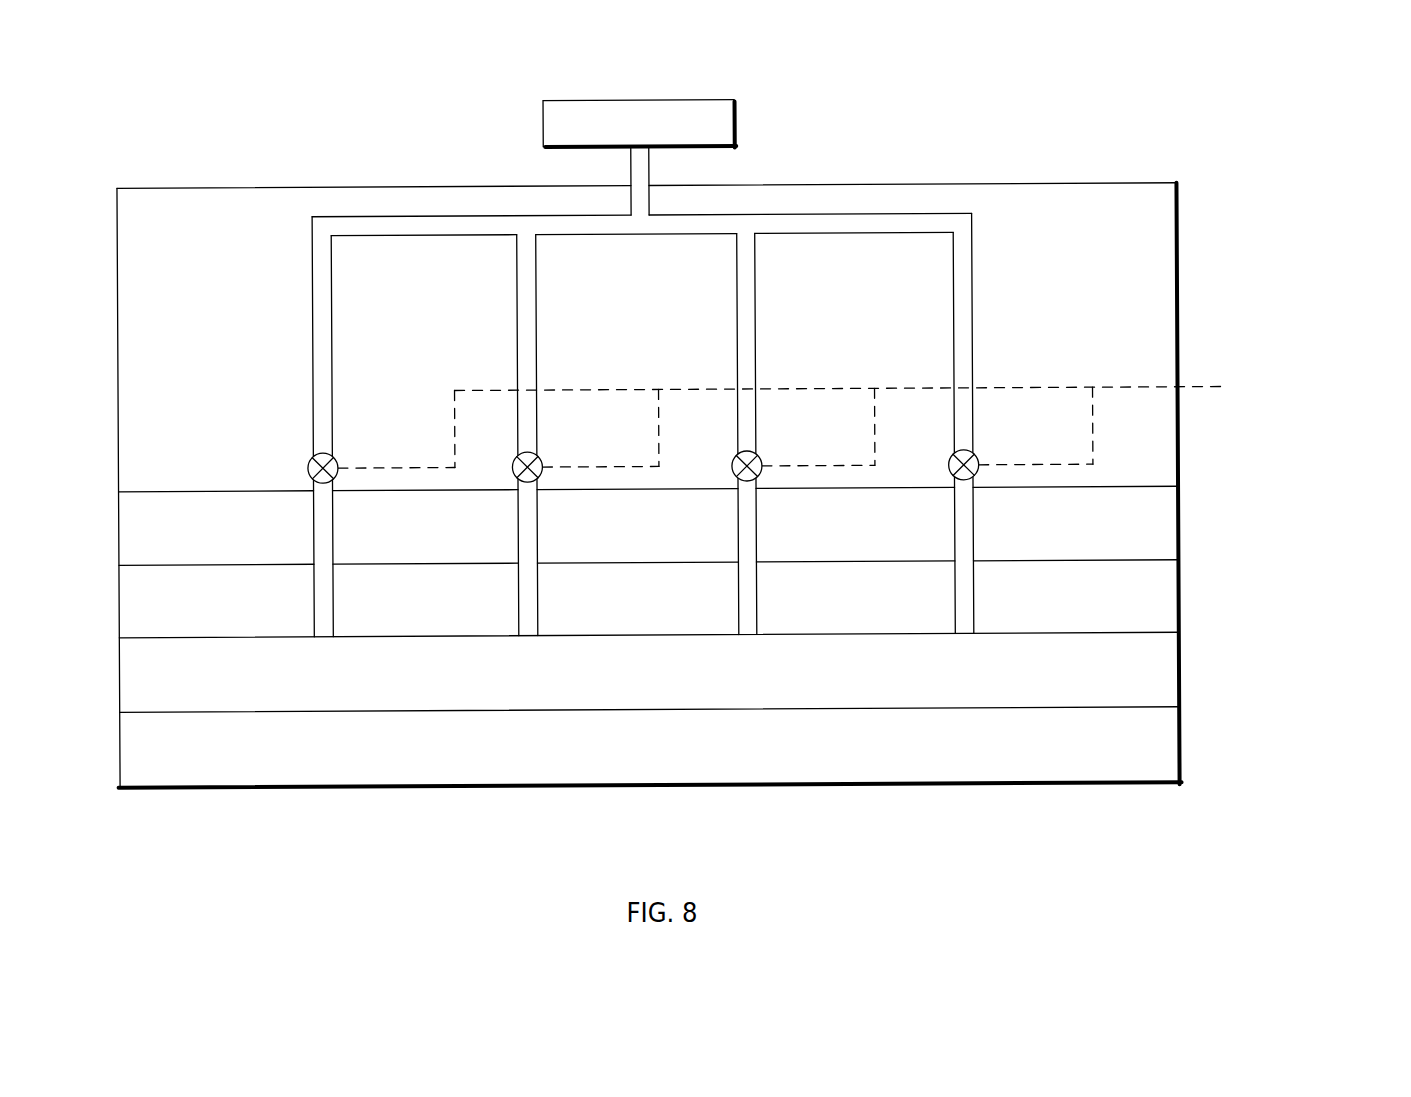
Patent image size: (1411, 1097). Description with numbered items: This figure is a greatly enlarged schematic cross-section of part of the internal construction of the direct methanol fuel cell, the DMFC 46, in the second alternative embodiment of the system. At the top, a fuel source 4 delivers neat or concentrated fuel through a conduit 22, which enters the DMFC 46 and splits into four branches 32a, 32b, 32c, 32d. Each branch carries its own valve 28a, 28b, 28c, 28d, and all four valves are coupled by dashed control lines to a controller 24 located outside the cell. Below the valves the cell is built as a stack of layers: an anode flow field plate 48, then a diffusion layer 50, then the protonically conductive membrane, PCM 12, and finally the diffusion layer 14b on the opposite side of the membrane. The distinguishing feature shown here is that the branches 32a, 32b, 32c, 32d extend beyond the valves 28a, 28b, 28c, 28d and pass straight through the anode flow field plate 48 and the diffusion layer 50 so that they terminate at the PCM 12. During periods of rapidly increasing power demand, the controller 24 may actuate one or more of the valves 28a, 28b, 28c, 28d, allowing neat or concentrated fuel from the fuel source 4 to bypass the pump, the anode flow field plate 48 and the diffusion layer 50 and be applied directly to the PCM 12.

The fuel source 4 is at (740, 119).
The conduit 22 is at (652, 171).
The DMFC 46 is at (1181, 249).
The branch 32a is at (334, 300).
The branch 32b is at (538, 295).
The branch 32c is at (757, 306).
The branch 32d is at (974, 298).
The valve 28a is at (334, 456).
The valve 28b is at (539, 456).
The valve 28c is at (758, 456).
The valve 28d is at (975, 456).
The controller 24 is at (863, 405).
The anode flow field plate 48 is at (127, 528).
The diffusion layer 50 is at (130, 603).
The protonically conductive membrane (PCM) 12 is at (130, 677).
The diffusion layer 14b is at (135, 748).